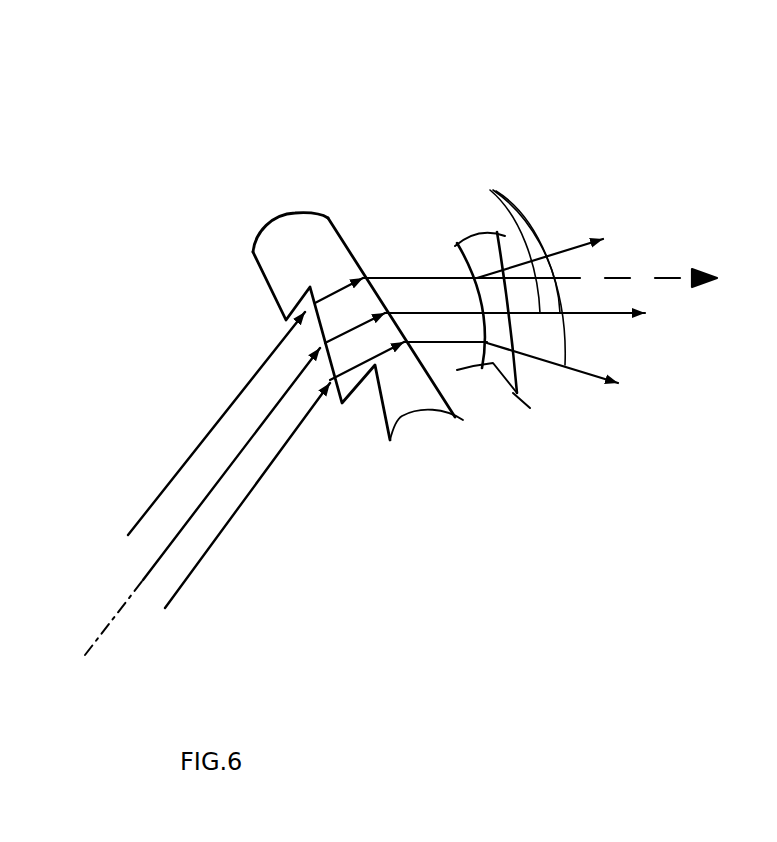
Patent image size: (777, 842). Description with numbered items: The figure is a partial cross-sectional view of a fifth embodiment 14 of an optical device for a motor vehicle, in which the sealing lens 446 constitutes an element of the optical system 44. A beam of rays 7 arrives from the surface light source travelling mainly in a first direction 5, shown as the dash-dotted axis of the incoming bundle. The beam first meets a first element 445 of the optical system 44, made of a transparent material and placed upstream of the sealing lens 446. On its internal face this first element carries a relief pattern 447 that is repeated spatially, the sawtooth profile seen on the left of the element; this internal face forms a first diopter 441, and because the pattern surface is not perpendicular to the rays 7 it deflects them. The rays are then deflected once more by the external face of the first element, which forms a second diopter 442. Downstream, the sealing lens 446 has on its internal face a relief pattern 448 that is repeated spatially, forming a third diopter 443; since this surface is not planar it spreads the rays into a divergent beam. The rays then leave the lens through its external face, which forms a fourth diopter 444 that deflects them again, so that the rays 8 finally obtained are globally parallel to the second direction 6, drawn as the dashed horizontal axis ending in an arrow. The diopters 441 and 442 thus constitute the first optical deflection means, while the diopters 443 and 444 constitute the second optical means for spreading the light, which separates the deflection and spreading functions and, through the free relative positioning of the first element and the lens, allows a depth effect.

The fifth embodiment of the optical device 14 is at (163, 280).
The optical system 44 is at (380, 165).
The first diopter 441 is at (273, 295).
The second diopter 442 is at (343, 240).
The third diopter 443 is at (453, 258).
The fourth diopter 444 is at (517, 373).
The first element 445 is at (405, 397).
The sealing lens 446 is at (493, 363).
The relief pattern 447 is at (338, 400).
The relief pattern 448 is at (472, 298).
The first direction 5 is at (120, 612).
The second direction 6 is at (617, 278).
The beam of rays 7 is at (203, 550).
The rays 8 is at (521, 273).